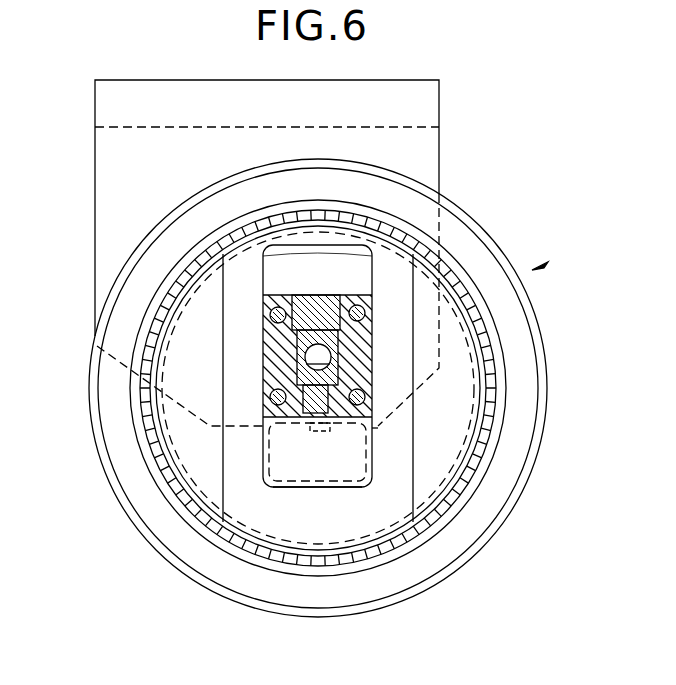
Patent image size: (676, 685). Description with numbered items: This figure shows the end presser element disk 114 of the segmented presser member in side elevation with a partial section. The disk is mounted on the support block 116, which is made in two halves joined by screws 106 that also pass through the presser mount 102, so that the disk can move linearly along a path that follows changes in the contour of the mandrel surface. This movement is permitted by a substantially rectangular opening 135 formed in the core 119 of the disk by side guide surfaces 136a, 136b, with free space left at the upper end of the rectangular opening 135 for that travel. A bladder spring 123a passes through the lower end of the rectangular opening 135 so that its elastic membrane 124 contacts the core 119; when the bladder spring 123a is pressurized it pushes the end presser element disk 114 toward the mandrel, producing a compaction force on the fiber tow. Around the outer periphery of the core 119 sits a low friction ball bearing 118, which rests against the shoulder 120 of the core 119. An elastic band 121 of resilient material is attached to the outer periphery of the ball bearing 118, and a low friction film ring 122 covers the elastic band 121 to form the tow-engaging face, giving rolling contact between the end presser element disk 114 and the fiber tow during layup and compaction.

The presser mount 102 is at (157, 168).
The screws 106 is at (266, 400).
The end presser element disk 114 is at (545, 266).
The support block 116 is at (263, 342).
The ball bearing 118 is at (487, 341).
The core 119 is at (462, 376).
The shoulder 120 is at (478, 426).
The elastic band 121 is at (145, 492).
The low friction film ring 122 is at (515, 508).
The bladder spring 123a is at (316, 489).
The elastic membrane 124 is at (323, 489).
The rectangular opening 135 is at (377, 247).
The side guide surface 136a is at (263, 261).
The side guide surface 136b is at (370, 279).